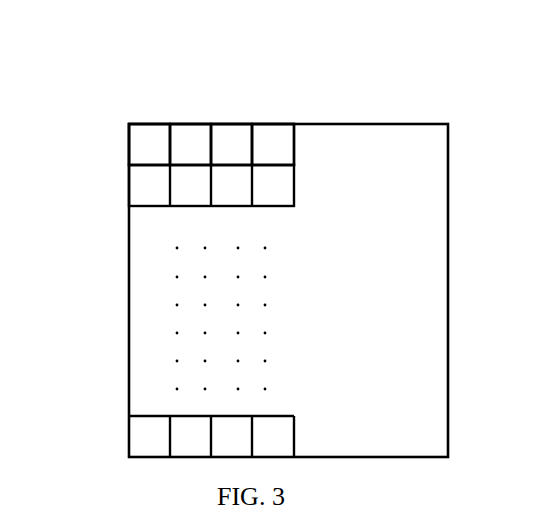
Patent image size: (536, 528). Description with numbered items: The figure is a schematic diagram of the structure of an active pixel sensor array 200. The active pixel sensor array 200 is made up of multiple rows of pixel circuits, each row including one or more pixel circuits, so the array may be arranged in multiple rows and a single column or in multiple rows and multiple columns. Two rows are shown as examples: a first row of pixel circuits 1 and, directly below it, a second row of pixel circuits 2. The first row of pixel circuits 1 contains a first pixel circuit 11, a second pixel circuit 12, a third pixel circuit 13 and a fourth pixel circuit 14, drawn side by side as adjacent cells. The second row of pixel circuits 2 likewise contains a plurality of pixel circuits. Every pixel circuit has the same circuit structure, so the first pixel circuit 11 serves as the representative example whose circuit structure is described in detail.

The active pixel sensor array 200 is at (262, 239).
The first row of pixel circuits 1 is at (197, 143).
The second row of pixel circuits 2 is at (116, 186).
The first pixel circuit 11 is at (143, 132).
The second pixel circuit 12 is at (185, 135).
The third pixel circuit 13 is at (230, 135).
The fourth pixel circuit 14 is at (278, 135).